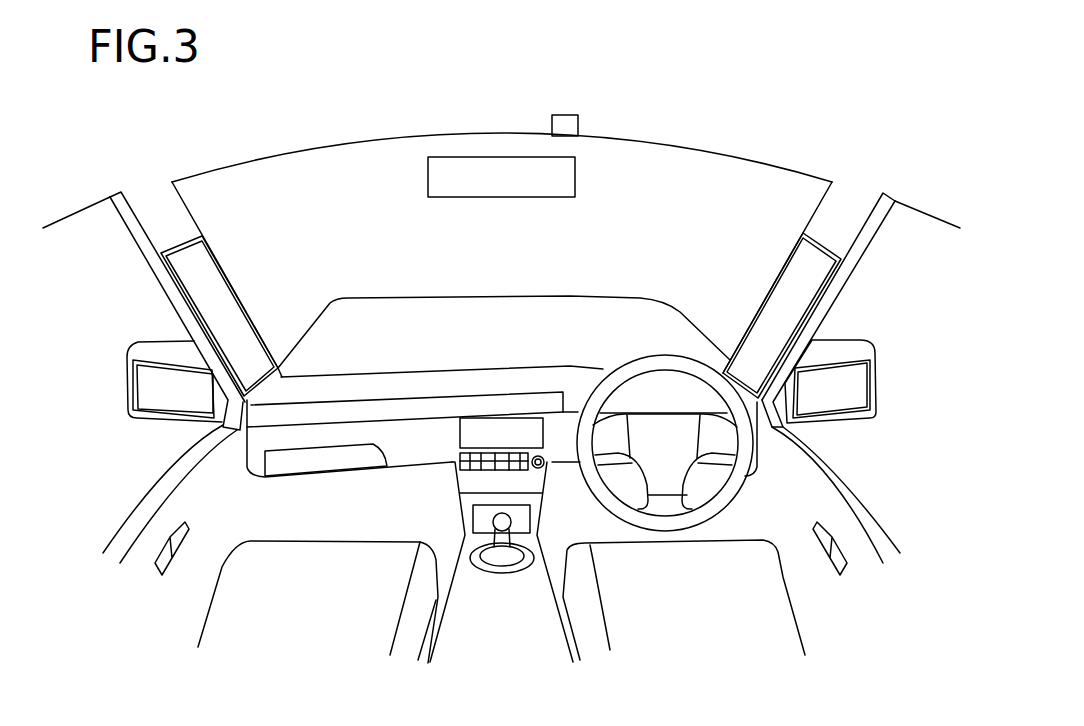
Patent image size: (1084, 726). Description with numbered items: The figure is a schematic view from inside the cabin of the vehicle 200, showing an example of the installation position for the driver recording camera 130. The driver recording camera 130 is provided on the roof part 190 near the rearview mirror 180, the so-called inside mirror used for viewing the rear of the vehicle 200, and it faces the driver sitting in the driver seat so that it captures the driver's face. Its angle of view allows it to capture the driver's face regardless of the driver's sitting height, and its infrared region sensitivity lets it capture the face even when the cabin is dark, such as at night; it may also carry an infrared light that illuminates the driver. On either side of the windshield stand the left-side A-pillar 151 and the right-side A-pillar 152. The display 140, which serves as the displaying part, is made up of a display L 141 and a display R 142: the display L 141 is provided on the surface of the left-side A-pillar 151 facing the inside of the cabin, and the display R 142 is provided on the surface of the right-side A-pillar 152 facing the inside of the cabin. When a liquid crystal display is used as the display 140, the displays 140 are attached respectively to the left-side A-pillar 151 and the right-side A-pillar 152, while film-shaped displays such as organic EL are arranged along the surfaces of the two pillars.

The driver recording camera 130 is at (570, 124).
The display 140 is at (501, 313).
The display L 141 is at (220, 298).
The display R 142 is at (783, 298).
The left-side A-pillar 151 is at (170, 213).
The right-side A-pillar 152 is at (833, 213).
The rearview mirror 180 is at (440, 179).
The roof part 190 is at (502, 240).
The vehicle 200 is at (869, 172).